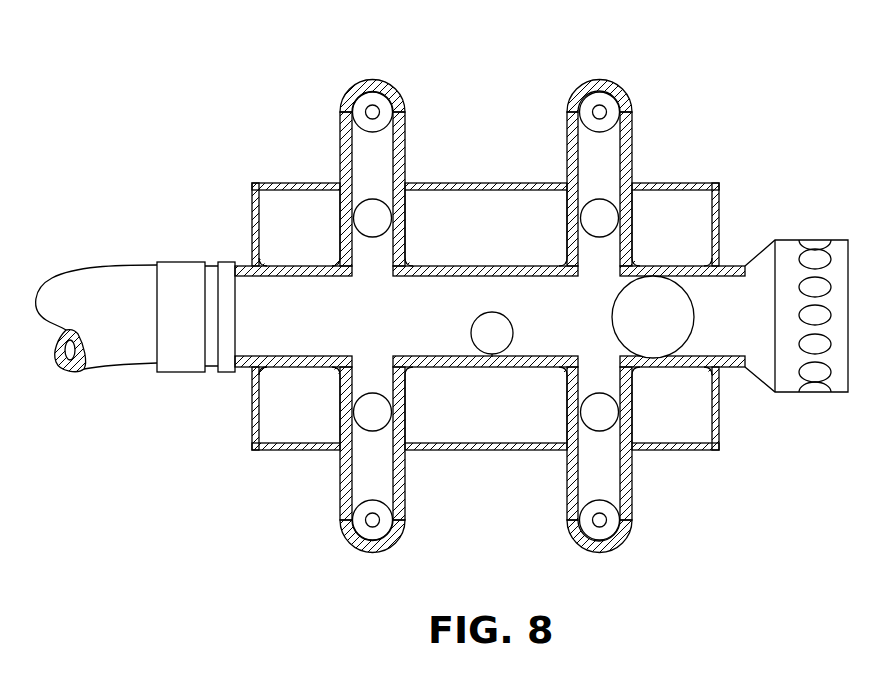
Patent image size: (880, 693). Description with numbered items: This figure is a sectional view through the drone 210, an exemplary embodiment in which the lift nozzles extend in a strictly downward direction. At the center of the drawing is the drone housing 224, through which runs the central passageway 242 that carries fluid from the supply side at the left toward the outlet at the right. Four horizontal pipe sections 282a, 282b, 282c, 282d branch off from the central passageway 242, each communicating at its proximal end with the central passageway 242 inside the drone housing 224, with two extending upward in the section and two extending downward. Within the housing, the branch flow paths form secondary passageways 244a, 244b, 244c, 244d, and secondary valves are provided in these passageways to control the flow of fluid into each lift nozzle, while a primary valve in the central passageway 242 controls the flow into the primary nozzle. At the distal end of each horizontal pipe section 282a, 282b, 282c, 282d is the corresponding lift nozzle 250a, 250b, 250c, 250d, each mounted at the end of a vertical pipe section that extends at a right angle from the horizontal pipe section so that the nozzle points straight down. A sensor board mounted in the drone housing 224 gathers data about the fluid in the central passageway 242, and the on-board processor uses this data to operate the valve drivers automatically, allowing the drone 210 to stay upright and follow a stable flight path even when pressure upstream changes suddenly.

The drone 210 is at (695, 105).
The drone housing 224 is at (527, 183).
The central passageway 242 is at (336, 323).
The secondary passageway 244a is at (373, 368).
The secondary passageway 244b is at (605, 372).
The secondary passageway 244c is at (377, 257).
The secondary passageway 244d is at (605, 258).
The lift nozzle 250a is at (370, 524).
The lift nozzle 250b is at (602, 524).
The lift nozzle 250c is at (373, 106).
The lift nozzle 250d is at (600, 106).
The horizontal pipe section 282a is at (340, 487).
The horizontal pipe section 282b is at (632, 476).
The horizontal pipe section 282c is at (405, 129).
The horizontal pipe section 282d is at (632, 129).